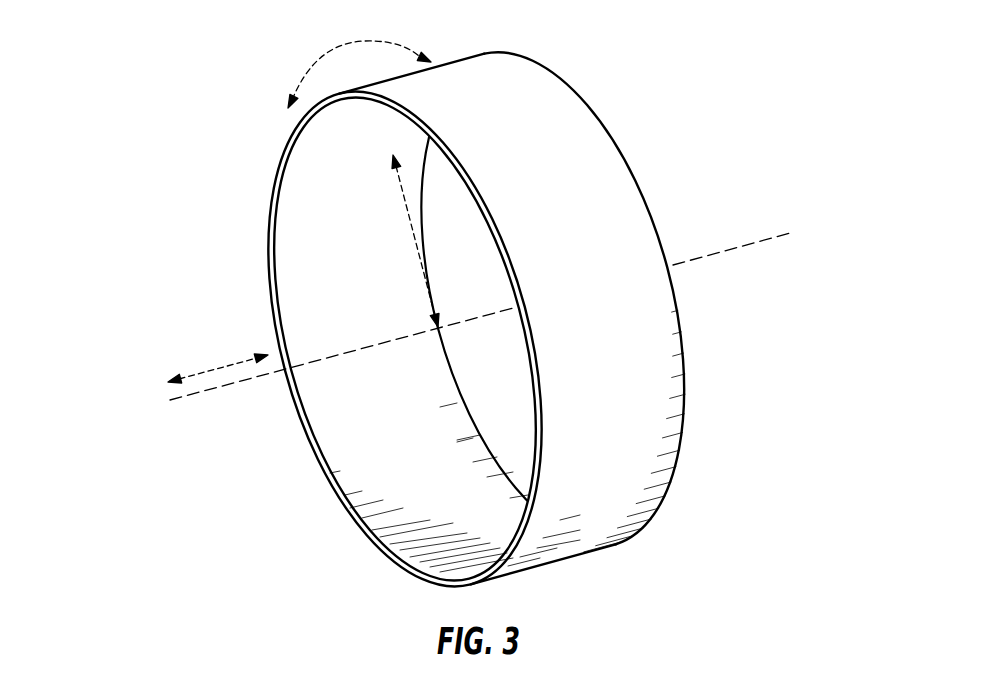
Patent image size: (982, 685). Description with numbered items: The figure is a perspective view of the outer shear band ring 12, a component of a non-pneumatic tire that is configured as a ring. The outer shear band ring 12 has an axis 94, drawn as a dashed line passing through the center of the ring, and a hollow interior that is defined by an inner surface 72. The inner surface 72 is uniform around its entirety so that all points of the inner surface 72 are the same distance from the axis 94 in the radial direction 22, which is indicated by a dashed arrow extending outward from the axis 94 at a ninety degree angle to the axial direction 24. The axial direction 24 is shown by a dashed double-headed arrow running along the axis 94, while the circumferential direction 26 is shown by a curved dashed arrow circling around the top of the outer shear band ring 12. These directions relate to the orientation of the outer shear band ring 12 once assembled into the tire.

The outer shear band ring 12 is at (600, 79).
The inner surface 72 is at (405, 483).
The axis 94 is at (738, 248).
The radial direction 22 is at (428, 282).
The axial direction 24 is at (218, 367).
The circumferential direction 26 is at (347, 47).